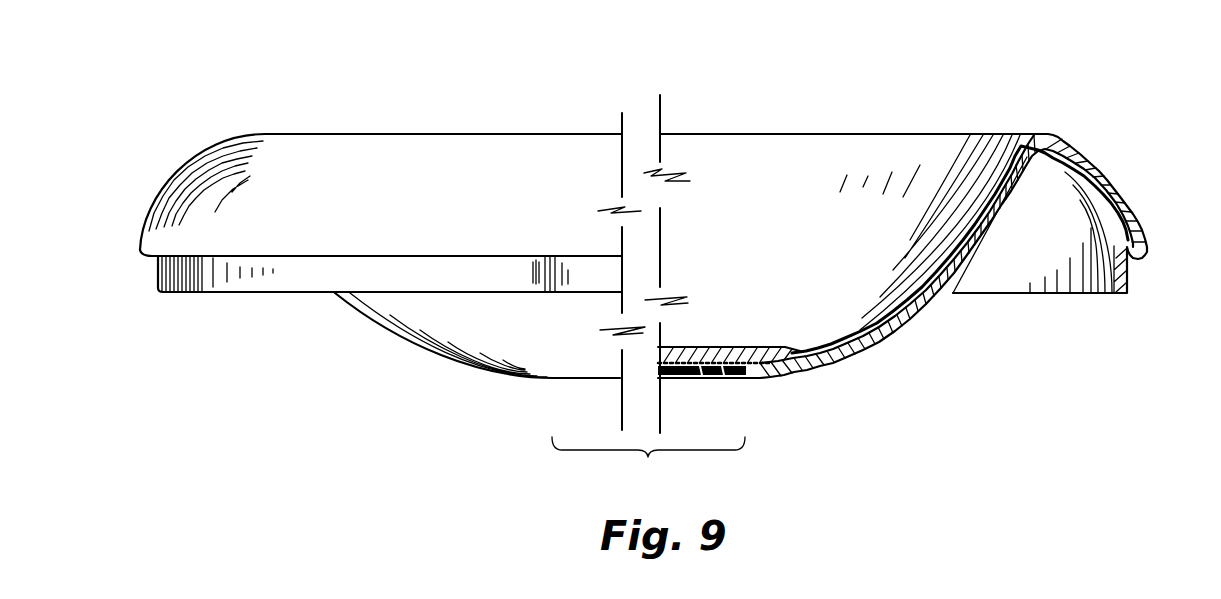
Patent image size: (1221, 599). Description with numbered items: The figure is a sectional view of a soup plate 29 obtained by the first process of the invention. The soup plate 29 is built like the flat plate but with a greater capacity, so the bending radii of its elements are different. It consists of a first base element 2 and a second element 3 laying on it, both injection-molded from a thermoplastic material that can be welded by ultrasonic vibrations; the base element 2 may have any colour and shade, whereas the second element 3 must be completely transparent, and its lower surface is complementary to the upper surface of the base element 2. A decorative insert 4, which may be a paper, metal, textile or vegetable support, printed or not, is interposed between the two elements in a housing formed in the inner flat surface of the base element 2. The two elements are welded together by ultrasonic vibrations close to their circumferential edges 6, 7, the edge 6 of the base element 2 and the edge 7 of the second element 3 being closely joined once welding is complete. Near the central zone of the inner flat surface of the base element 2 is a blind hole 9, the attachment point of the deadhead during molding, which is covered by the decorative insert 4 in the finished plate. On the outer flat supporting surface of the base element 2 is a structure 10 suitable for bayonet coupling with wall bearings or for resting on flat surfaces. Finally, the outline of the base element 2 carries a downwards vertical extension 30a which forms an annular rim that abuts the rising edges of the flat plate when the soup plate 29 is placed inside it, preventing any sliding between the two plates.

The soup plate 29 is at (835, 113).
The first base element 2 is at (837, 360).
The second element 3 is at (825, 343).
The decorative insert 4 is at (740, 360).
The circumferential edge of the element 2 6 is at (1145, 238).
The circumferential edge of the element 3 7 is at (1143, 241).
The blind hole 9 is at (694, 361).
The structure 10 is at (675, 377).
The downwards vertical extension 30a is at (192, 273).